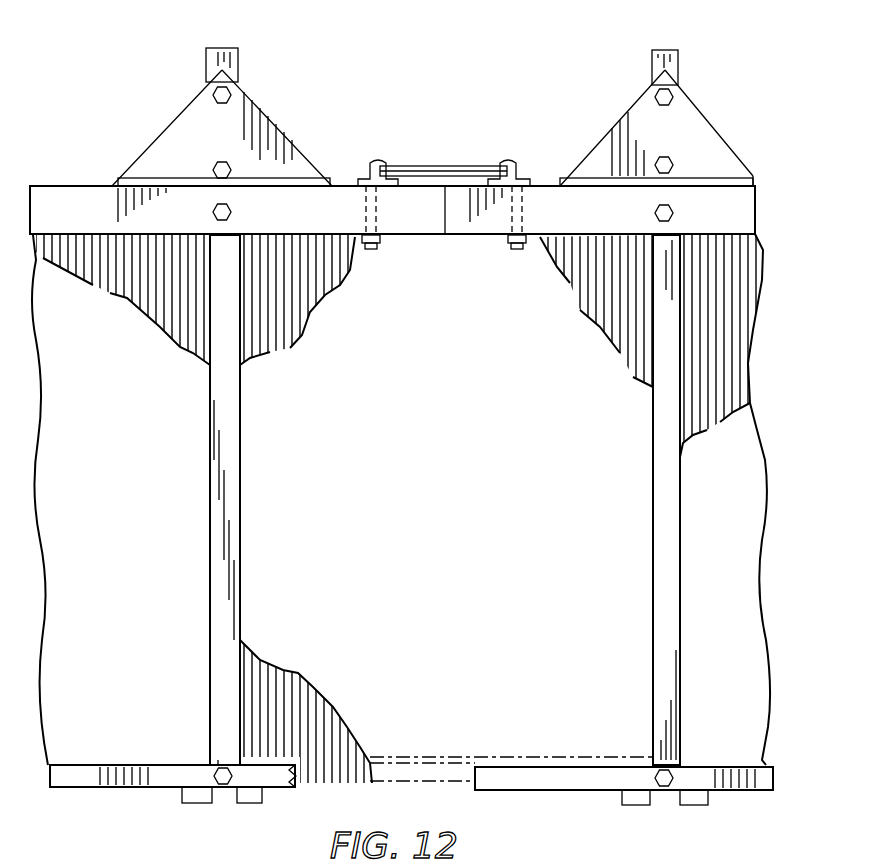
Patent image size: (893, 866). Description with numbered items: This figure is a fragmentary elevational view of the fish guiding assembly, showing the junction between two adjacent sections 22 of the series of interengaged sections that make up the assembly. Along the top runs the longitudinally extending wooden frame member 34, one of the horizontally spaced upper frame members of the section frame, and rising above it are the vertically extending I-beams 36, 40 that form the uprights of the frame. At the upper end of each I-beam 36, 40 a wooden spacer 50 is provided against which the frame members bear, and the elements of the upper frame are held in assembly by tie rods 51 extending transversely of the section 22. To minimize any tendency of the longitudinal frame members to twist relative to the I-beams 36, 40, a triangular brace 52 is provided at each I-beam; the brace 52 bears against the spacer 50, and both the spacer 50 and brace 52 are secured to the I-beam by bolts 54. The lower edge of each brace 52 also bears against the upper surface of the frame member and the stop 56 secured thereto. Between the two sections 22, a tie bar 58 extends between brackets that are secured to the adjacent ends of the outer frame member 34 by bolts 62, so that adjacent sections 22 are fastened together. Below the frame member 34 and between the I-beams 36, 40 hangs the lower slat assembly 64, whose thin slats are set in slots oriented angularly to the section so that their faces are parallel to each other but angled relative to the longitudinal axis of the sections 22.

The section 22 is at (90, 183).
The frame member 34 is at (748, 200).
The I-beam 36 is at (238, 52).
The I-beam 40 is at (678, 60).
The wooden spacer 50 is at (504, 165).
The tie rod 51 is at (676, 213).
The triangular brace 52 is at (725, 132).
The bolt 54 is at (672, 102).
The stop 56 is at (722, 180).
The tie bar 58 is at (450, 165).
The bolt 62 is at (510, 245).
The lower slat assembly 64 is at (310, 316).